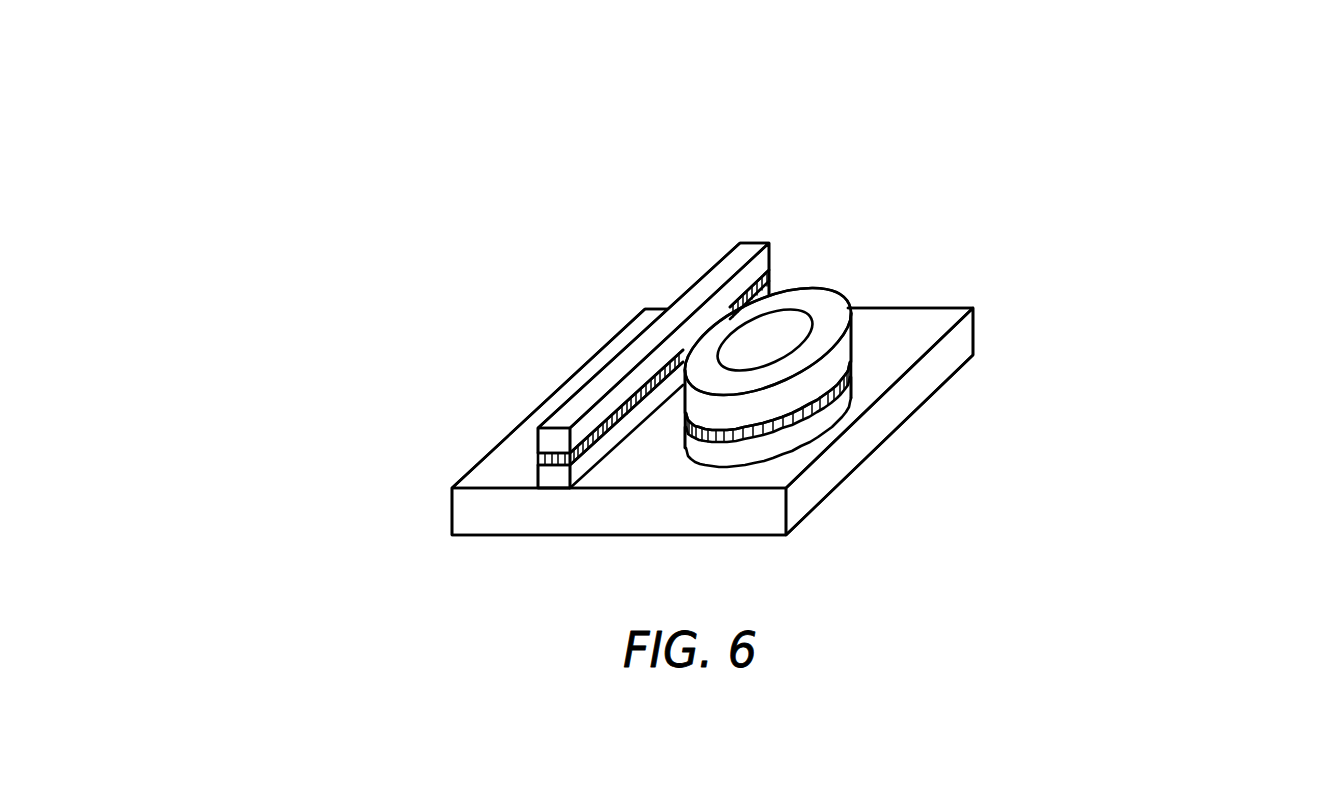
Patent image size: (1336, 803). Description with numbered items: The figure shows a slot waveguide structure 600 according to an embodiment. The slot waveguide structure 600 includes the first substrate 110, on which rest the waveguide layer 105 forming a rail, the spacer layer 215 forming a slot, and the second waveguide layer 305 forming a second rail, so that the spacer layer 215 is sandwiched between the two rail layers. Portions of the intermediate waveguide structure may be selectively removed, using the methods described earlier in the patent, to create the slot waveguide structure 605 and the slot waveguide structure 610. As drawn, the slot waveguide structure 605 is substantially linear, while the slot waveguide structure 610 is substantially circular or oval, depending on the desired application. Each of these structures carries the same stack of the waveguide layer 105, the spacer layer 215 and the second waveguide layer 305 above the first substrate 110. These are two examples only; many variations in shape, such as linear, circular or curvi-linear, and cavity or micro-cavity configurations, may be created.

The slot waveguide structure 600 is at (753, 56).
The slot waveguide structure 605 is at (752, 242).
The slot waveguide structure 610 is at (868, 243).
The second waveguide layer 305 is at (906, 277).
The spacer layer 215 is at (538, 460).
The waveguide layer 105 is at (530, 474).
The first substrate 110 is at (825, 478).